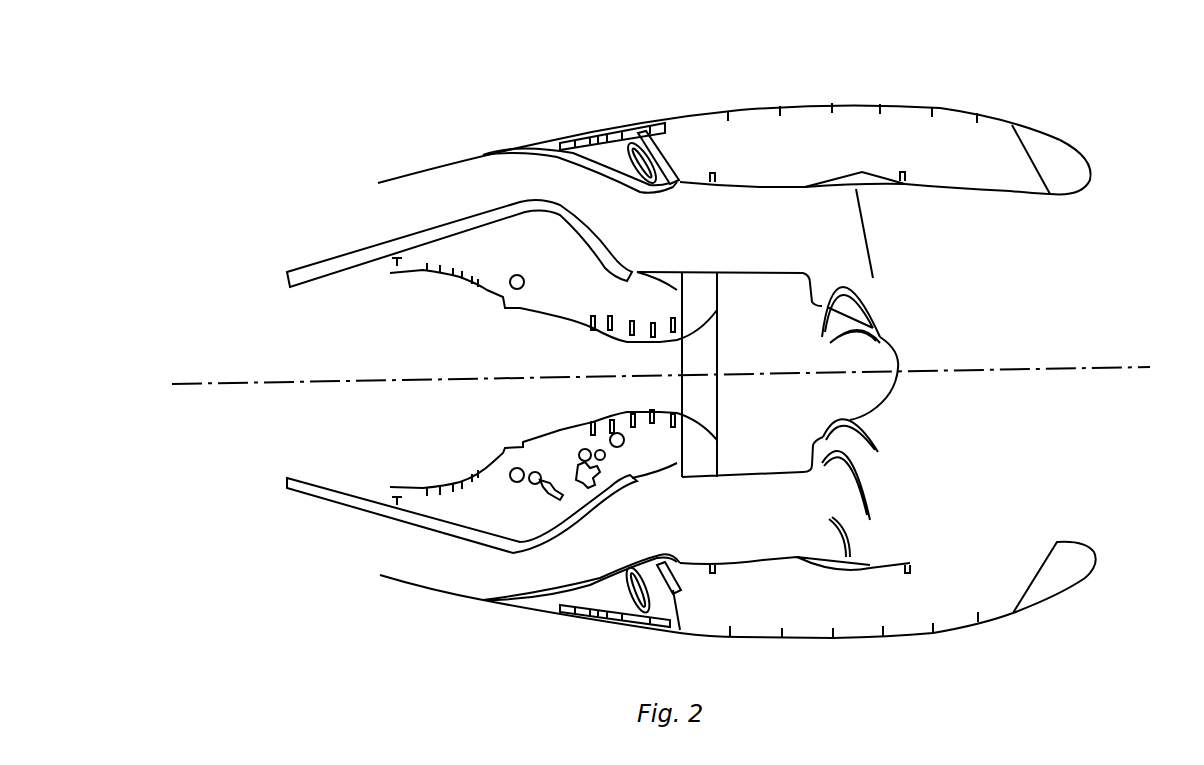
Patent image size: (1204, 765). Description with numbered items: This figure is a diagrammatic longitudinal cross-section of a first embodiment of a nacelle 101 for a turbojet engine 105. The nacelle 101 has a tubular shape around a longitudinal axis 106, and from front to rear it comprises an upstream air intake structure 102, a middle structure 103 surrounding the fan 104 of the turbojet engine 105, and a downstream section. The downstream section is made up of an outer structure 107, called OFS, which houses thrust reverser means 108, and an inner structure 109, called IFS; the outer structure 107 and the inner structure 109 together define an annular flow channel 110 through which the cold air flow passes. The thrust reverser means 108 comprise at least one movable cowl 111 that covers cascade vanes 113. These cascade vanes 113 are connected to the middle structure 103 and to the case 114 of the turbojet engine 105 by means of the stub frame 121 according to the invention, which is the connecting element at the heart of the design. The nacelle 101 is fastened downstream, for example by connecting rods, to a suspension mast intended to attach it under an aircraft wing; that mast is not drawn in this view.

The nacelle 101 is at (1035, 97).
The upstream air intake structure 102 is at (1097, 145).
The middle structure 103 is at (823, 100).
The fan 104 is at (878, 296).
The turbojet engine 105 is at (608, 387).
The longitudinal axis 106 is at (1098, 368).
The outer structure 107 is at (428, 158).
The thrust reverser means 108 is at (657, 117).
The inner structure 109 is at (344, 250).
The annular flow channel 110 is at (503, 182).
The movable cowl 111 is at (402, 173).
The cascade vanes 113 is at (605, 127).
The case 114 is at (705, 180).
The stub frame 121 is at (676, 136).